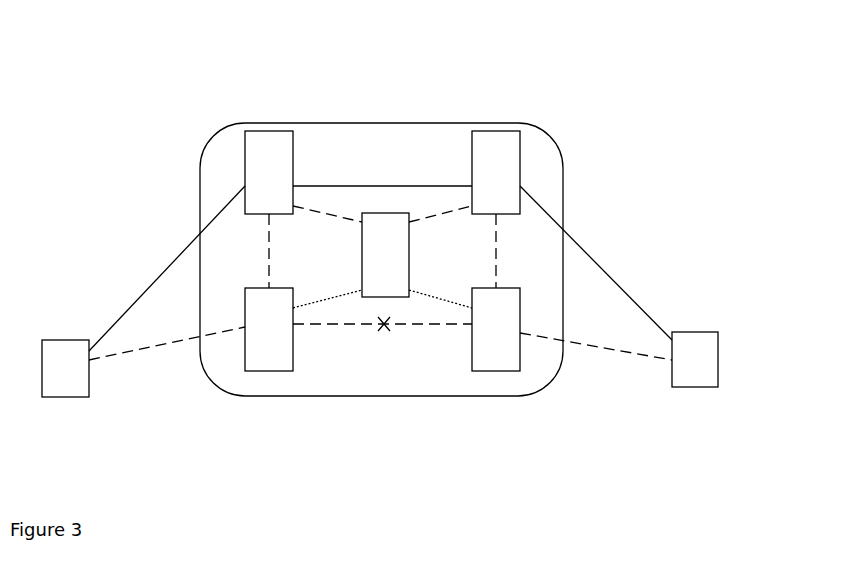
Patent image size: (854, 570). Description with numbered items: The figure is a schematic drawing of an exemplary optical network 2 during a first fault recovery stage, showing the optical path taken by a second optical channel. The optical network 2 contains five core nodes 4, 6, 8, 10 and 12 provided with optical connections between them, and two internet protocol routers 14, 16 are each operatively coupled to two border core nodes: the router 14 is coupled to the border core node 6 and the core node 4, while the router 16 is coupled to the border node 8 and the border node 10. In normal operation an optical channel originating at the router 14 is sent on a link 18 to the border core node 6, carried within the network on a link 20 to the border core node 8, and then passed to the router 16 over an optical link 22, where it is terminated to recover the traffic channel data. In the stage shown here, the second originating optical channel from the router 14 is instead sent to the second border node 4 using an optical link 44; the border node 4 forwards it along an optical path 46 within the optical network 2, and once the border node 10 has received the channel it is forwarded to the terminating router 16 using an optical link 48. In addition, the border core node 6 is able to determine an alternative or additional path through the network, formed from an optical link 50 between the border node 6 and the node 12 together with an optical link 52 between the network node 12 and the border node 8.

The optical network 2 is at (309, 123).
The core node 4 is at (245, 143).
The border core node 6 is at (273, 371).
The border core node 8 is at (507, 371).
The border node 10 is at (520, 143).
The core node 12 is at (387, 213).
The IP router 14 is at (89, 375).
The IP router 16 is at (718, 375).
The link 18 is at (155, 350).
The link 20 is at (452, 324).
The optical link 22 is at (630, 352).
The optical link 44 is at (193, 245).
The optical path 46 is at (420, 186).
The optical link 48 is at (618, 285).
The optical link 50 is at (326, 300).
The optical link 52 is at (423, 292).